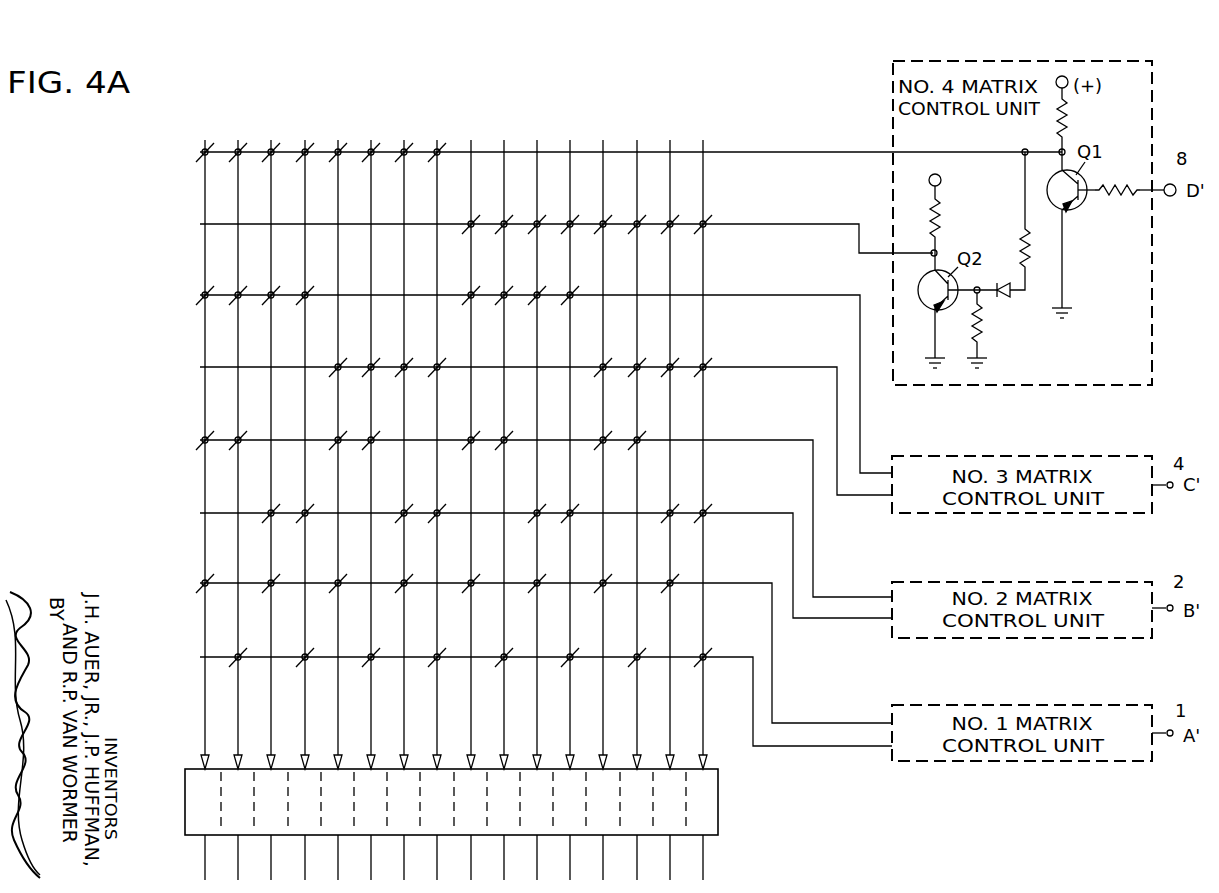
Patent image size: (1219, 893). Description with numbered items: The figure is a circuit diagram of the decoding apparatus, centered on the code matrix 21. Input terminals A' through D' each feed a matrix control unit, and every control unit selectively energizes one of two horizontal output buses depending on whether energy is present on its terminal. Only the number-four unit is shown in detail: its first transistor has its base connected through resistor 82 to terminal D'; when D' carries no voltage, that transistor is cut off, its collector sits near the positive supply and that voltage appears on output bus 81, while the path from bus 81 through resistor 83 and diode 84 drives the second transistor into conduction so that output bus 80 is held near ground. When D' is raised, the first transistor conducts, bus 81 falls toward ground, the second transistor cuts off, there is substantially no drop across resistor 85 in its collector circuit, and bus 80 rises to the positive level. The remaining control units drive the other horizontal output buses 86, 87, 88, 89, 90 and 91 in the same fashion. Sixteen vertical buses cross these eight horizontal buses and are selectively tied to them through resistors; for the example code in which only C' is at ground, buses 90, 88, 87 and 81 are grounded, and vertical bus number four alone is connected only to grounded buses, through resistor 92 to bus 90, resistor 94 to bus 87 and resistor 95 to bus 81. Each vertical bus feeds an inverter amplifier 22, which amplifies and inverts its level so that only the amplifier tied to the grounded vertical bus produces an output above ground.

The code matrix 21 is at (542, 440).
The inverter amplifier 22 is at (718, 786).
The output bus 80 is at (787, 213).
The output bus 81 is at (629, 157).
The resistor 82 is at (1127, 208).
The resistor 83 is at (1020, 240).
The diode 84 is at (1004, 296).
The resistor 85 is at (940, 210).
The output bus 86 is at (770, 283).
The output bus 87 is at (546, 411).
The output bus 88 is at (755, 429).
The output bus 89 is at (749, 502).
The output bus 90 is at (544, 633).
The output bus 91 is at (729, 646).
The resistor 92 is at (339, 578).
The resistor 94 is at (339, 362).
The resistor 95 is at (341, 155).